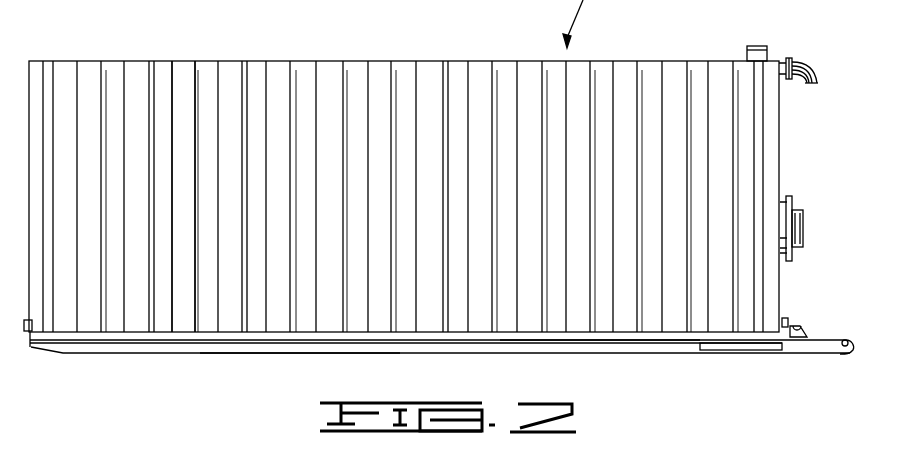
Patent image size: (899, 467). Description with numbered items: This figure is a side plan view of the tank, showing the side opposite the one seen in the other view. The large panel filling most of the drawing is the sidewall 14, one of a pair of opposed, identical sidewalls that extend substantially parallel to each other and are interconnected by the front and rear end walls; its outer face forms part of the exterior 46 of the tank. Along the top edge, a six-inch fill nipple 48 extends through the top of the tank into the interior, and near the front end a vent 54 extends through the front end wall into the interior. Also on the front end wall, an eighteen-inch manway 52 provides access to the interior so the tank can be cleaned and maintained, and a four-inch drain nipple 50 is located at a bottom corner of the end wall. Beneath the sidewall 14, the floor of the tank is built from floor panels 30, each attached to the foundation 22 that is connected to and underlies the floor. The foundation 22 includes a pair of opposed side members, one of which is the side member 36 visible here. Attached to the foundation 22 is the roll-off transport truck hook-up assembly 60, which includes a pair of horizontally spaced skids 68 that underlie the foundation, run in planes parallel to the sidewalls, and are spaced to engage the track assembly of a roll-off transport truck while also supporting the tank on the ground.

The sidewall 14 is at (378, 90).
The exterior 46 is at (183, 100).
The fill nipple 48 is at (748, 47).
The vent 54 is at (812, 68).
The manway 52 is at (785, 212).
The drain nipple 50 is at (29, 333).
The foundation 22 is at (99, 335).
The side member 36 is at (258, 336).
The skid 68 is at (587, 344).
The roll-off transport truck hook-up assembly 60 is at (828, 344).
The floor panel 30 is at (244, 5).